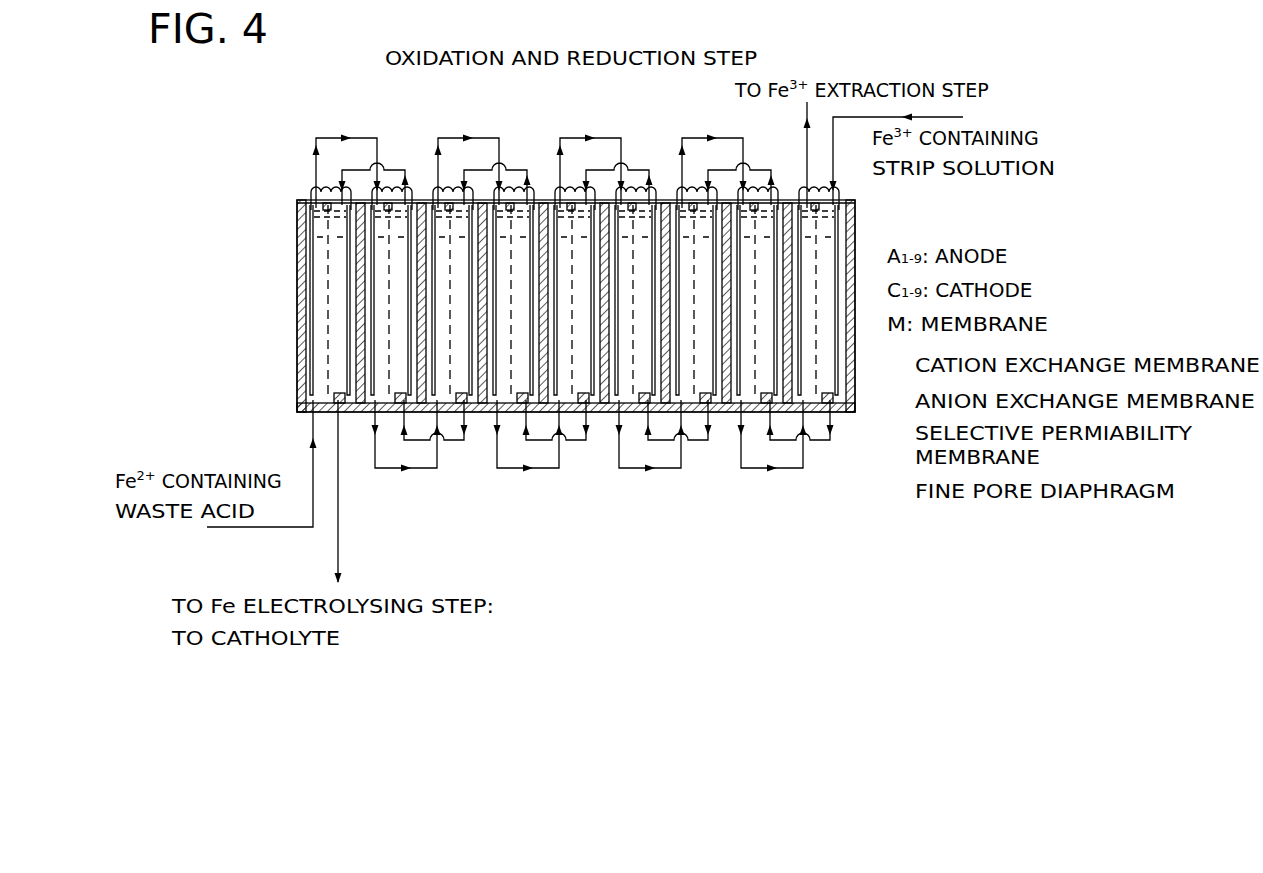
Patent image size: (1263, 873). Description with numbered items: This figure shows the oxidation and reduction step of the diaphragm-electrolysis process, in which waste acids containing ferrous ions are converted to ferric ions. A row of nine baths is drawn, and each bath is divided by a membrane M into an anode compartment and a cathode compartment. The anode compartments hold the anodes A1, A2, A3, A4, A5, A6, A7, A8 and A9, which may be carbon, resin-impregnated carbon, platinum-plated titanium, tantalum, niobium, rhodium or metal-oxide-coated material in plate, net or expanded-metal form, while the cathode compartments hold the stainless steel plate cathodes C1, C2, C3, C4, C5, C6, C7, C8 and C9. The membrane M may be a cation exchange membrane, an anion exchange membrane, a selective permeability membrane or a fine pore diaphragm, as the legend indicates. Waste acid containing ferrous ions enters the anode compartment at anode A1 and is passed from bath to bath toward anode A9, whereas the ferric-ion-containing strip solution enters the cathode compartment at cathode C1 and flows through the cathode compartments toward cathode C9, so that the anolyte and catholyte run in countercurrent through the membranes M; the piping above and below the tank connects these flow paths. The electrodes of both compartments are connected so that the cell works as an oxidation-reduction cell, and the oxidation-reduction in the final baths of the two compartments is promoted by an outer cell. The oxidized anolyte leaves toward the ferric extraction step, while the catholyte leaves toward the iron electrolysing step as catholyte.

The anode A1 is at (318, 300).
The anode A2 is at (379, 300).
The anode A3 is at (440, 300).
The anode A4 is at (501, 300).
The anode A5 is at (562, 300).
The anode A6 is at (623, 300).
The anode A7 is at (684, 300).
The anode A8 is at (745, 300).
The anode A9 is at (806, 300).
The cathode C1 is at (828, 300).
The cathode C2 is at (767, 300).
The cathode C3 is at (706, 300).
The cathode C4 is at (645, 300).
The cathode C5 is at (584, 300).
The cathode C6 is at (523, 300).
The cathode C7 is at (462, 300).
The cathode C8 is at (401, 300).
The cathode C9 is at (340, 300).
The membrane M is at (580, 302).